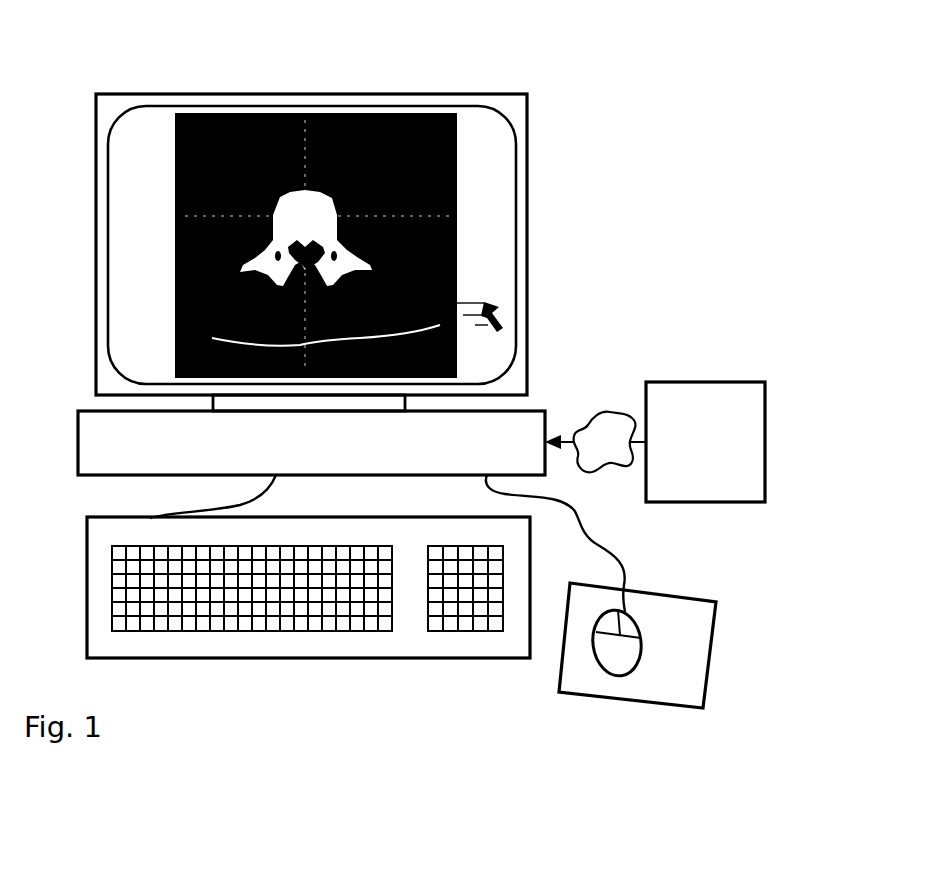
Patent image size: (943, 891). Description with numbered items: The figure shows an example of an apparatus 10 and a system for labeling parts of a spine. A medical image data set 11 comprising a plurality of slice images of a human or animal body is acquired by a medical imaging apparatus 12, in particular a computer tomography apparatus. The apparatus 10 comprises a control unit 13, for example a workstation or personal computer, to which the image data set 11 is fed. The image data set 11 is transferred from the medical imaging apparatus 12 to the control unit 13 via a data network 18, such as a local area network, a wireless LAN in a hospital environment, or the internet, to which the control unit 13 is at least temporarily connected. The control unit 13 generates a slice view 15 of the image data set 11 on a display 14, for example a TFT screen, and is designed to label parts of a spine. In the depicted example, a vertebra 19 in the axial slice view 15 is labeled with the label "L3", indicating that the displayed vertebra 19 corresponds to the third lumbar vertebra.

The apparatus 10 is at (582, 77).
The medical image data set 11 is at (637, 440).
The medical imaging apparatus 12 is at (721, 454).
The control unit 13 is at (130, 452).
The display 14 is at (235, 106).
The slice view 15 is at (339, 200).
The data network 18 is at (616, 452).
The vertebra 19 is at (272, 206).